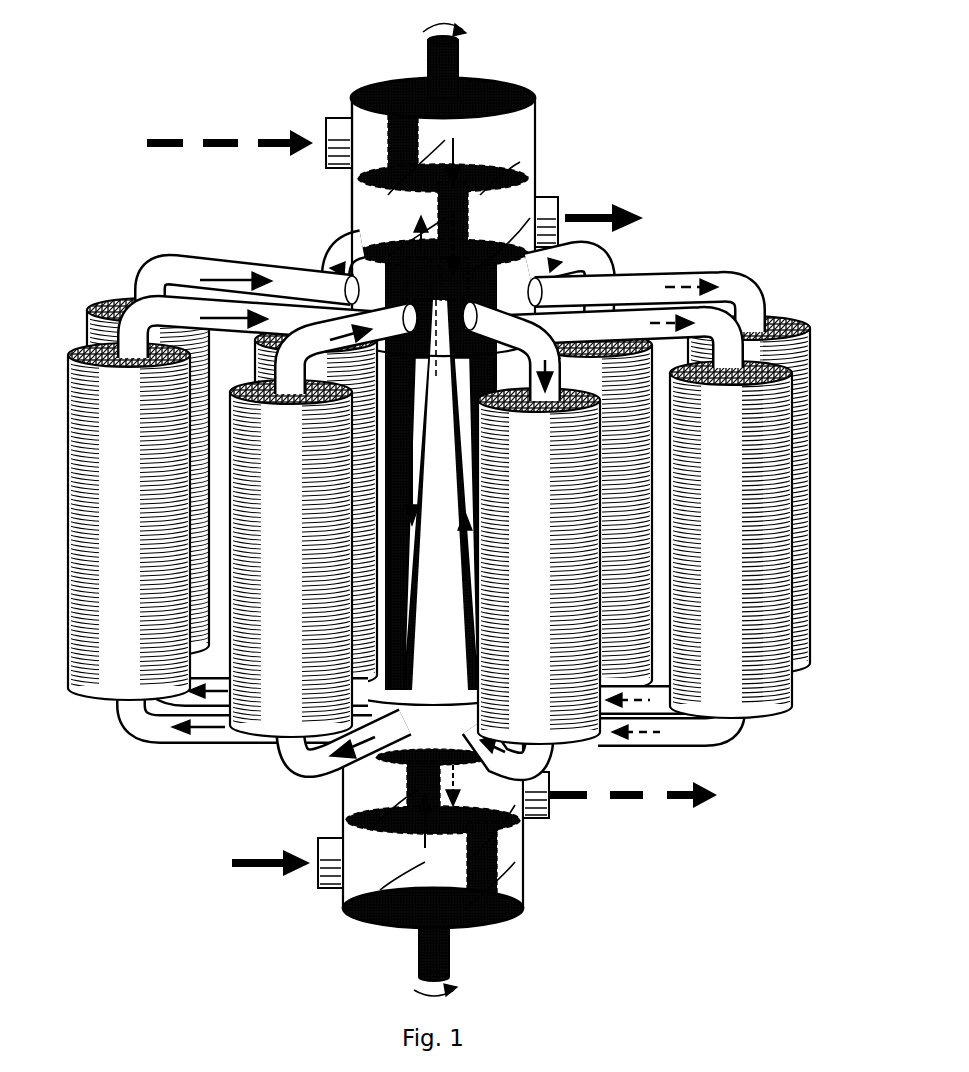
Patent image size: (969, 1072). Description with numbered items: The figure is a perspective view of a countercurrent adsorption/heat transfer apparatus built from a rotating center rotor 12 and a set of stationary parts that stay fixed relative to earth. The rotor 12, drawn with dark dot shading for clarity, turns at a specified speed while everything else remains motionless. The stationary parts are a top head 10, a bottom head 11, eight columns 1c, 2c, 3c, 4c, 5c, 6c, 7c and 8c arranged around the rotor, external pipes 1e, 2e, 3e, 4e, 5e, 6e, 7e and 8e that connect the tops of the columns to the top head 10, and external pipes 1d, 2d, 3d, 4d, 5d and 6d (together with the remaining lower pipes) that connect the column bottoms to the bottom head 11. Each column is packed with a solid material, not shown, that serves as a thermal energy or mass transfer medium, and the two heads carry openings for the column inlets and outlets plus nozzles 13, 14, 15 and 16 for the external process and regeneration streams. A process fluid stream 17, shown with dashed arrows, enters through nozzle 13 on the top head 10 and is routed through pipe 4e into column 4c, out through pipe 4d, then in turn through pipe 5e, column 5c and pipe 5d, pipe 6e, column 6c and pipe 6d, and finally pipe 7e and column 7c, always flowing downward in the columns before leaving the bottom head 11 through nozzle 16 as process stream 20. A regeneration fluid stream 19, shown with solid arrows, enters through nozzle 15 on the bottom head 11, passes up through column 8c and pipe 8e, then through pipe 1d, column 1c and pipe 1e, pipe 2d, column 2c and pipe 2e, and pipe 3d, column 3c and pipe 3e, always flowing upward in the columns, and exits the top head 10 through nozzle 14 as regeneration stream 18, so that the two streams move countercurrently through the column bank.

The top head 10 is at (527, 147).
The bottom head 11 is at (517, 857).
The rotor 12 is at (443, 68).
The nozzle 13 is at (326, 127).
The nozzle 14 is at (543, 203).
The nozzle 15 is at (330, 882).
The nozzle 16 is at (553, 810).
The process fluid stream 17 is at (228, 140).
The regeneration stream 18 is at (627, 207).
The regeneration fluid stream 19 is at (232, 858).
The process stream 20 is at (697, 807).
The column 1c is at (103, 330).
The column 2c is at (113, 512).
The column 3c is at (263, 690).
The column 4c is at (598, 742).
The column 5c is at (768, 702).
The column 6c is at (800, 420).
The column 7c is at (625, 597).
The column 8c is at (277, 333).
The external pipe 1e is at (240, 272).
The external pipe 2e is at (177, 315).
The external pipe 3e is at (280, 363).
The external pipe 4e is at (558, 368).
The external pipe 5e is at (768, 350).
The external pipe 6e is at (753, 312).
The external pipe 7e is at (593, 250).
The external pipe 8e is at (330, 248).
The external pipe 1d is at (190, 697).
The external pipe 2d is at (210, 735).
The external pipe 3d is at (320, 763).
The external pipe 4d is at (550, 753).
The external pipe 5d is at (738, 724).
The external pipe 6d is at (647, 697).